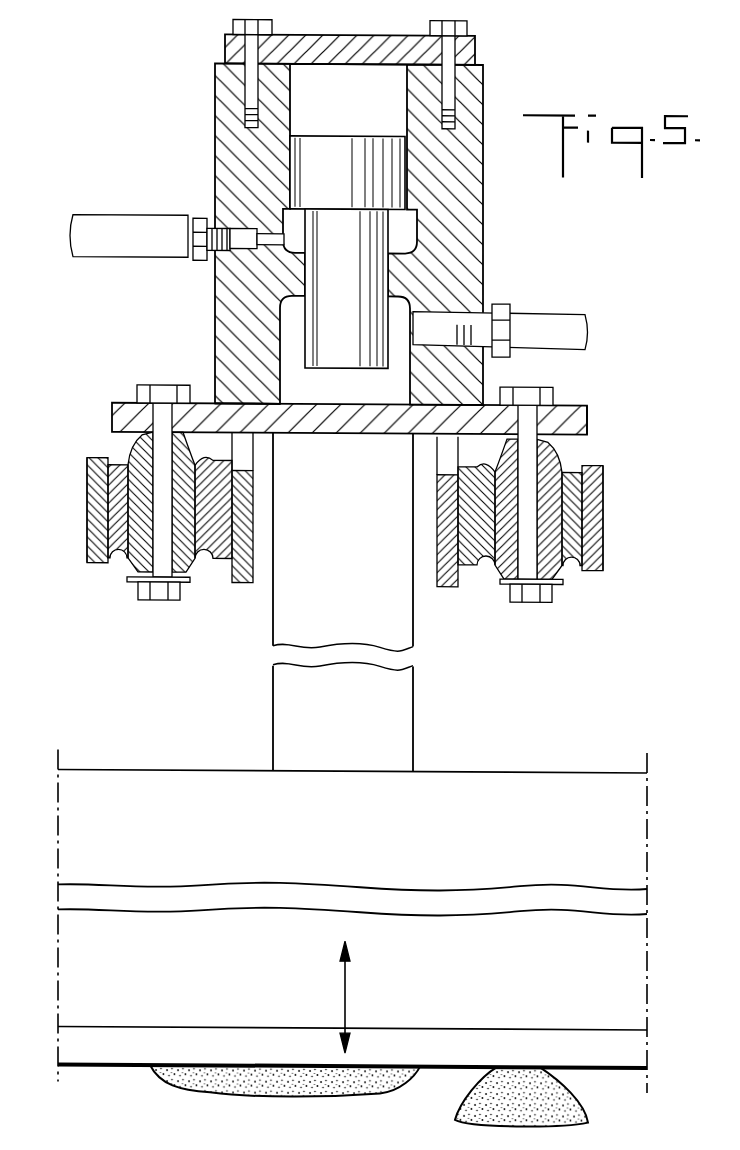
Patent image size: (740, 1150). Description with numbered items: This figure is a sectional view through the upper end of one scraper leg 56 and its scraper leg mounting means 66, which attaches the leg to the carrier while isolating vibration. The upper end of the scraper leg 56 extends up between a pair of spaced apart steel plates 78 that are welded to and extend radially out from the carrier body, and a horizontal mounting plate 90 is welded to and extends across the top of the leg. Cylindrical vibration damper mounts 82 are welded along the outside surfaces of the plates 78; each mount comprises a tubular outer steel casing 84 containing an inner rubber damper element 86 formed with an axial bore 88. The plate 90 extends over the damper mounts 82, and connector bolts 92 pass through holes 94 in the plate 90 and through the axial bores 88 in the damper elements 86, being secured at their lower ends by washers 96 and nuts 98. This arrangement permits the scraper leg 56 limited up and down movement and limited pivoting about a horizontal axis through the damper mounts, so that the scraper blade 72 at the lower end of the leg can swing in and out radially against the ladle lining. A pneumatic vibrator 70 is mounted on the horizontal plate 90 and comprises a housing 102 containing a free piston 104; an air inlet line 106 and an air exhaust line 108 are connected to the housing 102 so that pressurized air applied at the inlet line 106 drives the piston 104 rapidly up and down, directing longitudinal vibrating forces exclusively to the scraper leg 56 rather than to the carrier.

The scraper leg 56 is at (273, 634).
The scraper leg mounting means 66 is at (607, 409).
The pneumatic vibrator 70 is at (204, 71).
The scraper blade 72 is at (148, 779).
The steel plate 78 is at (241, 586).
The vibration damper mount 82 is at (80, 495).
The tubular outer steel casing 84 is at (87, 528).
The inner rubber damper element 86 is at (128, 460).
The axial bore 88 is at (247, 387).
The horizontal mounting plate 90 is at (112, 410).
The connector bolt 92 is at (163, 385).
The hole 94 is at (206, 402).
The washer 96 is at (128, 580).
The nut 98 is at (138, 598).
The housing 102 is at (218, 137).
The free piston 104 is at (391, 140).
The air inlet line 106 is at (121, 222).
The air exhaust line 108 is at (549, 318).